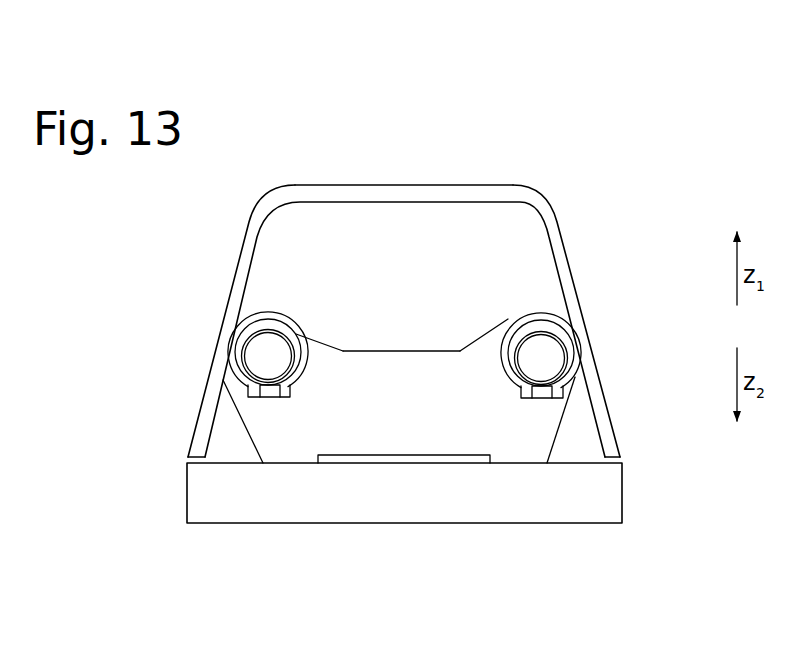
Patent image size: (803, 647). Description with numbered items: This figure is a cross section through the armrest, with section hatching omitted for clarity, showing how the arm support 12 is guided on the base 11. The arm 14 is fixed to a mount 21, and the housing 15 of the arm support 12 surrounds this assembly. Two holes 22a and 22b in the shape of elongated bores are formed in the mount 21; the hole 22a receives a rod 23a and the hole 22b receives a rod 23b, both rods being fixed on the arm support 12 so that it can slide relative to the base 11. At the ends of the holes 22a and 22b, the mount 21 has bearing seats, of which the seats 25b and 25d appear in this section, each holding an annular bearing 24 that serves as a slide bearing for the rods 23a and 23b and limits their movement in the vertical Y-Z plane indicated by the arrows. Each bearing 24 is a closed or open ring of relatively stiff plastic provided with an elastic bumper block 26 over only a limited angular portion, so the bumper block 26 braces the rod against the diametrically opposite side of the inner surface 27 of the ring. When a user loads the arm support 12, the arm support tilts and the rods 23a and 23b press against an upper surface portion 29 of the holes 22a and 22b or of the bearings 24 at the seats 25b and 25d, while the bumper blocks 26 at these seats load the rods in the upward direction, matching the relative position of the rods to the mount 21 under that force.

The base 11 is at (469, 500).
The arm support 12 is at (438, 168).
The arm 14 is at (397, 502).
The housing 15 is at (523, 185).
The mount 21 is at (383, 410).
The hole 22a is at (567, 392).
The hole 22b is at (232, 335).
The rod 23a is at (556, 316).
The rod 23b is at (281, 351).
The annular bearing 24 is at (245, 388).
The bearing seat 25b is at (510, 367).
The bearing seat 25d is at (225, 378).
The elastic bumper block 26 is at (272, 398).
The inner surface 27 is at (240, 362).
The upper surface portion 29 is at (272, 313).